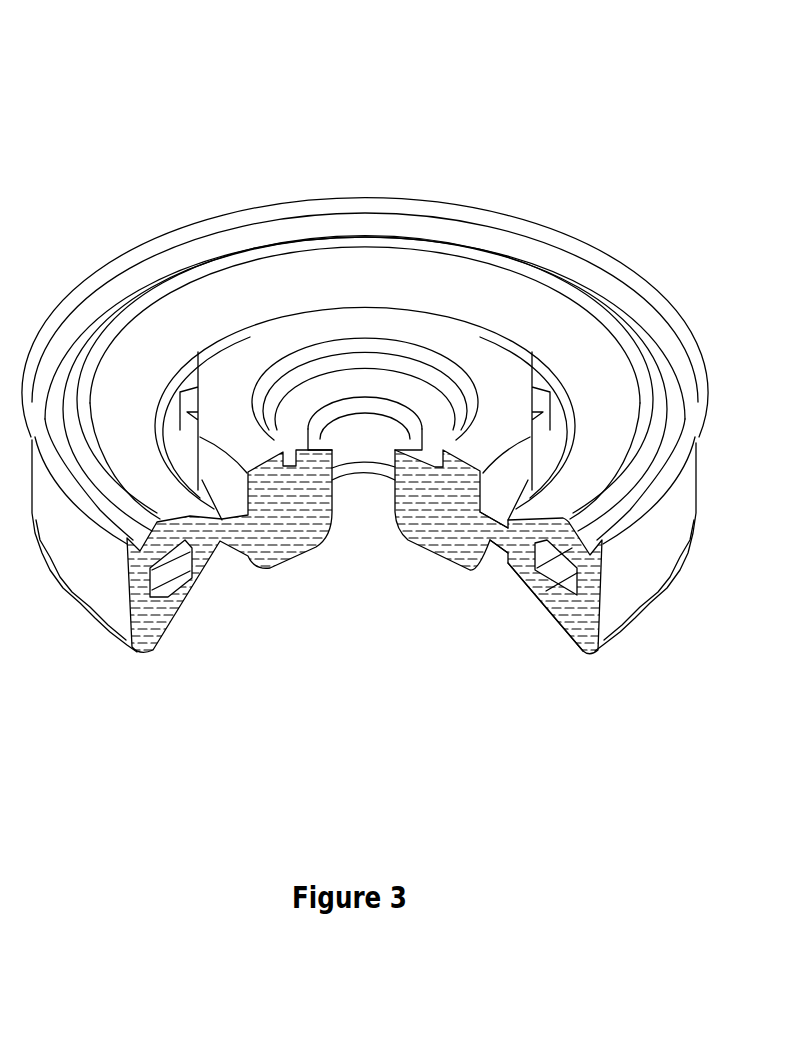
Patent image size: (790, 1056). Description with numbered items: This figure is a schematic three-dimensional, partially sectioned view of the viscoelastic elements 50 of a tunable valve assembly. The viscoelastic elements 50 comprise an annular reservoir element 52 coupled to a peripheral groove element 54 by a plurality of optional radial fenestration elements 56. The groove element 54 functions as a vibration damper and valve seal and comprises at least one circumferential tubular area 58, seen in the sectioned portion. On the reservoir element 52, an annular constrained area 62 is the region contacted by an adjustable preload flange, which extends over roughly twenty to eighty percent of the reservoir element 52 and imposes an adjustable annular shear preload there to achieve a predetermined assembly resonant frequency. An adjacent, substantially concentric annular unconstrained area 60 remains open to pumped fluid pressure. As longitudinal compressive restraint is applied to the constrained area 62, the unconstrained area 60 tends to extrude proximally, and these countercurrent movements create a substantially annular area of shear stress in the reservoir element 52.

The viscoelastic elements 50 is at (616, 173).
The annular reservoir element 52 is at (404, 549).
The groove element 54 is at (544, 636).
The radial fenestration elements 56 is at (493, 558).
The circumferential tubular area 58 is at (557, 564).
The annular unconstrained area 60 is at (392, 328).
The annular constrained area 62 is at (325, 393).